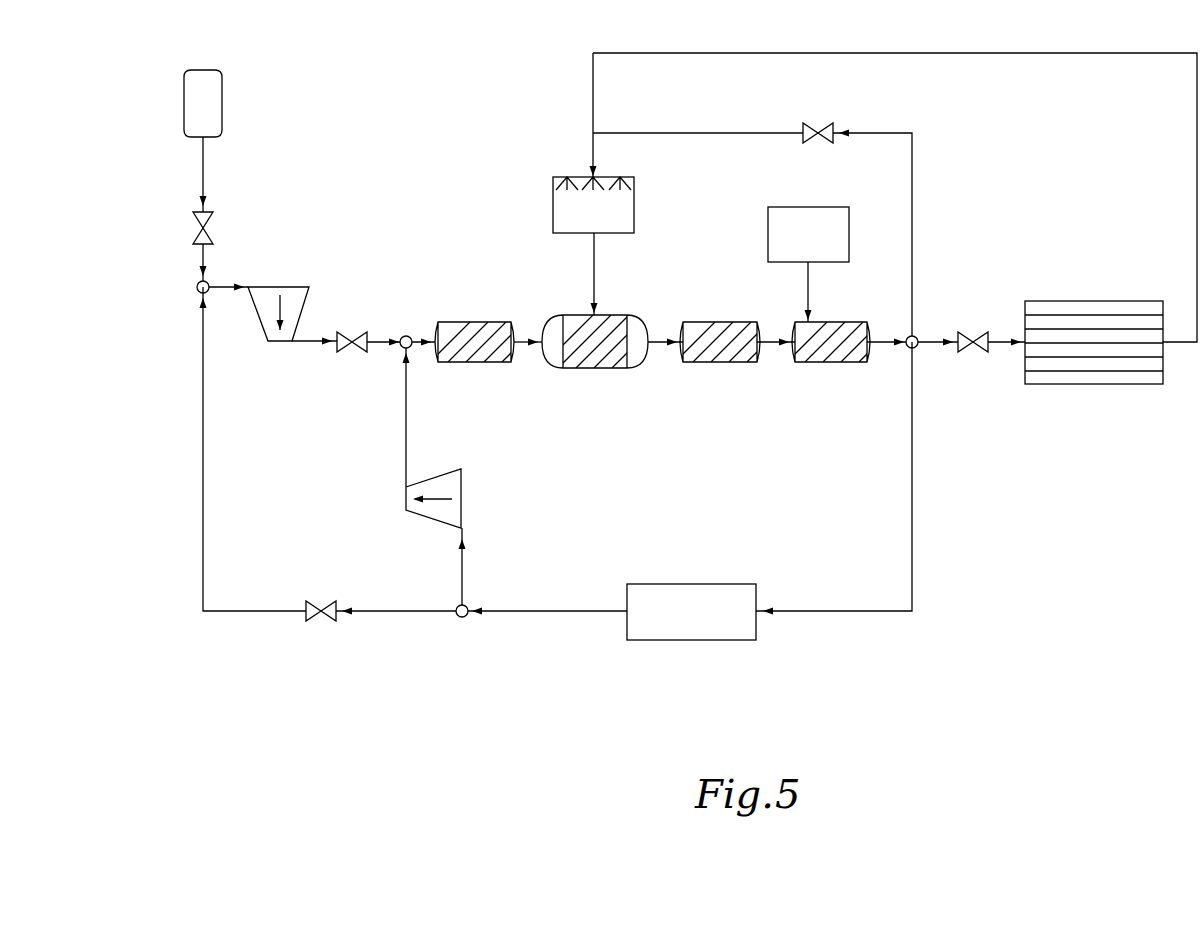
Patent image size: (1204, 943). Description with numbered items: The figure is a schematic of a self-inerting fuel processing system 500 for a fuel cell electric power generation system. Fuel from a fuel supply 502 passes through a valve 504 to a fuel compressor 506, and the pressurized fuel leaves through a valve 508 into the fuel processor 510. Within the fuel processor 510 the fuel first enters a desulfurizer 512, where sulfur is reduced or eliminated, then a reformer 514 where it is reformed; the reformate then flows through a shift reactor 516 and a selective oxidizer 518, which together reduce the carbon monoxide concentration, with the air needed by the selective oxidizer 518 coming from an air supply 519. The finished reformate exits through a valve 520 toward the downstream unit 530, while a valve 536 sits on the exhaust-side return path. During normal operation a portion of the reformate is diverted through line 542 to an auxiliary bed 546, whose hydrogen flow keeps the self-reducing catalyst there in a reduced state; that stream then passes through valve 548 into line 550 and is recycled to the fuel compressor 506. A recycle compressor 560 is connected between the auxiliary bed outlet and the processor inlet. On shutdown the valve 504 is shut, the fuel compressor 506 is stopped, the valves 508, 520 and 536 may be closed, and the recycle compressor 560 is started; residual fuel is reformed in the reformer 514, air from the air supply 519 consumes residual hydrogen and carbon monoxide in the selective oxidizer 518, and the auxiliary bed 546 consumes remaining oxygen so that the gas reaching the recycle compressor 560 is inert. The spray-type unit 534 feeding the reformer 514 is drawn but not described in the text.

The fuel processing system 500 is at (407, 205).
The fuel supply 502 is at (210, 70).
The valve 504 is at (207, 228).
The fuel compressor 506 is at (305, 287).
The valve 508 is at (352, 341).
The fuel processor 510 is at (736, 428).
The desulfurizer 512 is at (465, 362).
The reformer 514 is at (576, 315).
The shift reactor 516 is at (712, 322).
The selective oxidizer 518 is at (832, 362).
The air supply 519 is at (824, 253).
The valve 520 is at (972, 340).
The product collector / storage 530 is at (1077, 301).
The spray unit 534 is at (610, 225).
The valve 536 is at (818, 132).
The line 542 is at (912, 500).
The auxiliary bed 546 is at (709, 623).
The valve 548 is at (320, 613).
The line 550 is at (203, 510).
The recycle compressor 560 is at (407, 497).